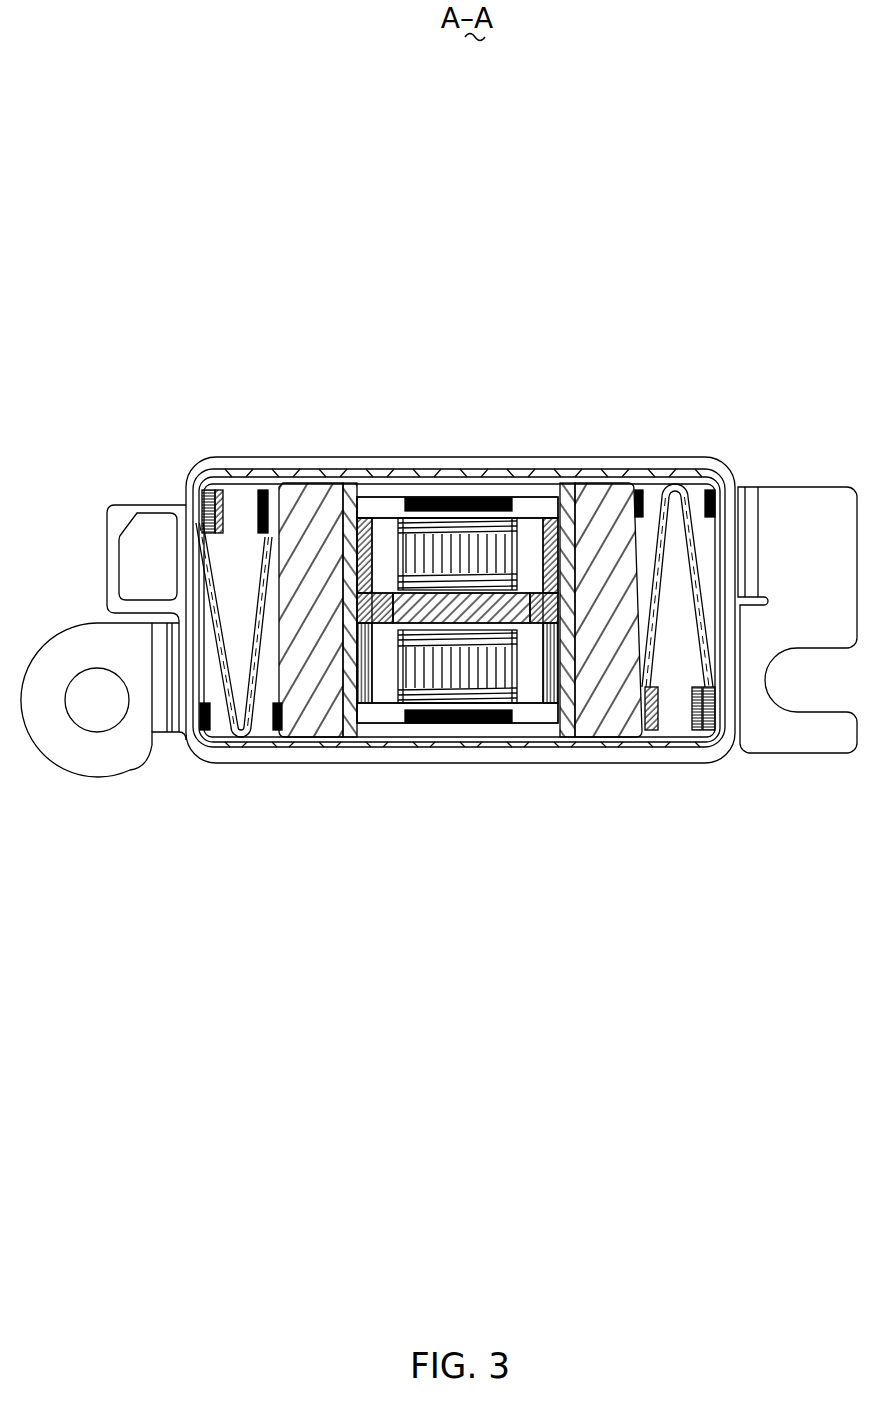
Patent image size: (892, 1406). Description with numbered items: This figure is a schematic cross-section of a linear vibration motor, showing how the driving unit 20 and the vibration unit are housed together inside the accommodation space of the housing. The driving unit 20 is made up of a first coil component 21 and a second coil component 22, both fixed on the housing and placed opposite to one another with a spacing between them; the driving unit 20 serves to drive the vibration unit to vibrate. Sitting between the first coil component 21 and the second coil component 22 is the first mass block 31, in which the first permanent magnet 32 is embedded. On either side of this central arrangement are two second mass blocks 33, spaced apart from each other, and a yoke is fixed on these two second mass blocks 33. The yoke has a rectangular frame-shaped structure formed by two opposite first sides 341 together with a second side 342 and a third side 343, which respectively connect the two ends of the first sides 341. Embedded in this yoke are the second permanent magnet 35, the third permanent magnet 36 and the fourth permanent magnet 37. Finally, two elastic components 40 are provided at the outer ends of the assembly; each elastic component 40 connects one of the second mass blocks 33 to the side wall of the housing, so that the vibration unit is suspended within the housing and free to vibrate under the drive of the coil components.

The driving unit 20 is at (422, 589).
The first coil component 21 is at (467, 557).
The second coil component 22 is at (422, 606).
The first mass block 31 is at (375, 610).
The first permanent magnet 32 is at (410, 603).
The second mass block 33 is at (592, 700).
The first side 341 is at (348, 705).
The second side 342 is at (395, 497).
The third side 343 is at (378, 727).
The second permanent magnet 35 is at (357, 540).
The third permanent magnet 36 is at (563, 722).
The fourth permanent magnet 37 is at (493, 722).
The elastic component 40 is at (697, 490).